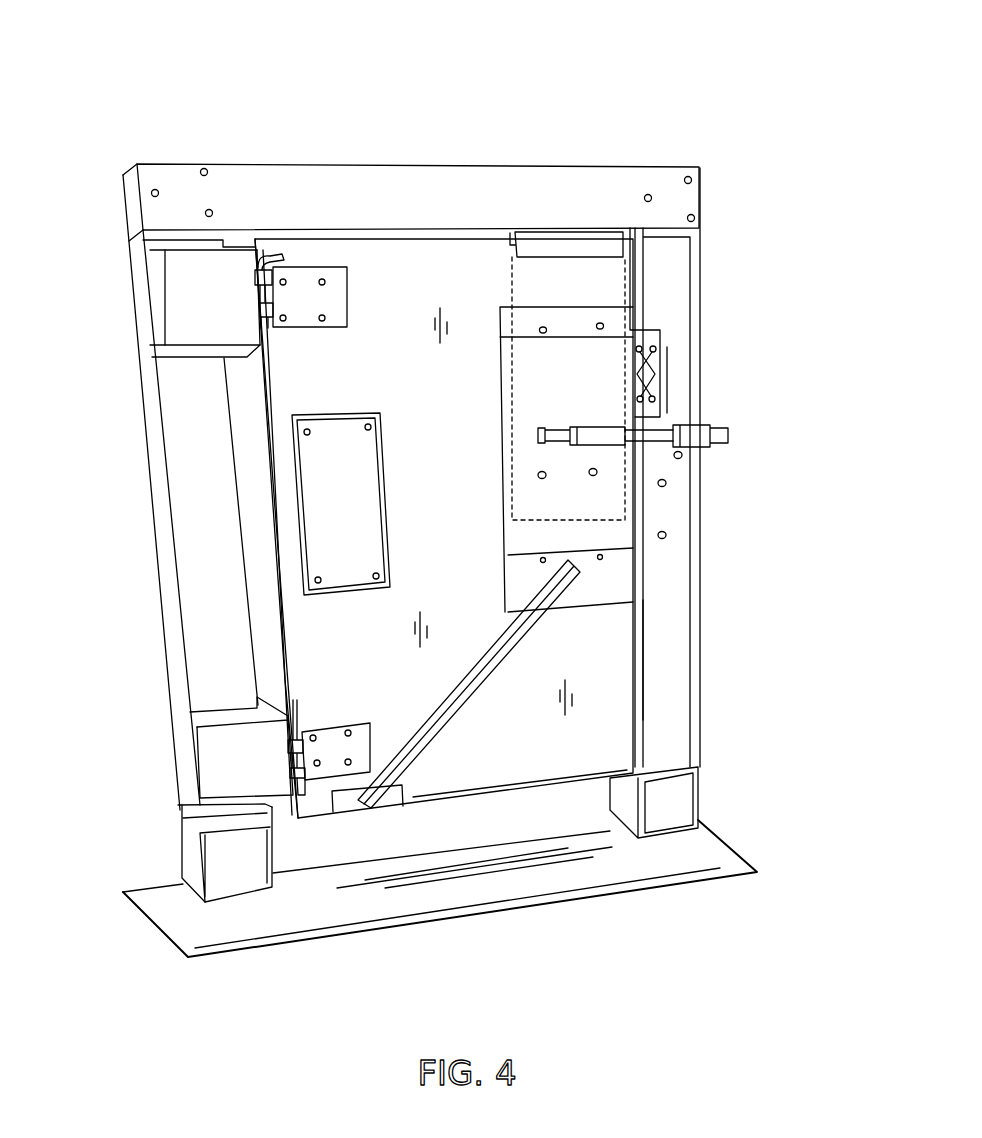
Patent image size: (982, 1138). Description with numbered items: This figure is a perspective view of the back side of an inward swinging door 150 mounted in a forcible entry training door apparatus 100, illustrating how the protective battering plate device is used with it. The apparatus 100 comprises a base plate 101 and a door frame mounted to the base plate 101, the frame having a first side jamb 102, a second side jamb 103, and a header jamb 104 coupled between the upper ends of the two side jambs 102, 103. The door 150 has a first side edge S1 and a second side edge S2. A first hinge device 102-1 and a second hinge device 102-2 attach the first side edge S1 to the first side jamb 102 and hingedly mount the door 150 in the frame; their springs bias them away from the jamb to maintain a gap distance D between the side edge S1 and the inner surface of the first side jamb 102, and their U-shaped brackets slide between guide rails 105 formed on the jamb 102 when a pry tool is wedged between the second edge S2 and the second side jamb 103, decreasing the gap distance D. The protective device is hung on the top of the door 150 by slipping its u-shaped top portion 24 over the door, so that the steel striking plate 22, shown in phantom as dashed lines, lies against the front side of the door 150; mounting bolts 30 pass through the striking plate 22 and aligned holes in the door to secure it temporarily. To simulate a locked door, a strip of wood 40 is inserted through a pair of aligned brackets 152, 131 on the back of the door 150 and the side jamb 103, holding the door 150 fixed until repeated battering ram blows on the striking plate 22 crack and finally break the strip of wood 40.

The forcible entry training door apparatus 100 is at (292, 72).
The header jamb 104 is at (543, 195).
The first side jamb 102 is at (190, 478).
The first hinge device 102-1 is at (180, 307).
The second hinge device 102-2 is at (215, 765).
The guide rails 105 is at (155, 240).
The second side jamb 103 is at (680, 640).
The base plate 101 is at (503, 892).
The u-shaped top portion 24 is at (645, 240).
The striking plate 22 is at (645, 278).
The bracket 152 is at (593, 427).
The strip of wood 40 is at (540, 427).
The bracket 131 is at (700, 423).
The mounting bolts 30 is at (593, 473).
The inward swinging door 150 is at (497, 797).
The first side edge S1 is at (280, 607).
The second side edge S2 is at (645, 668).
The gap distance D is at (278, 547).